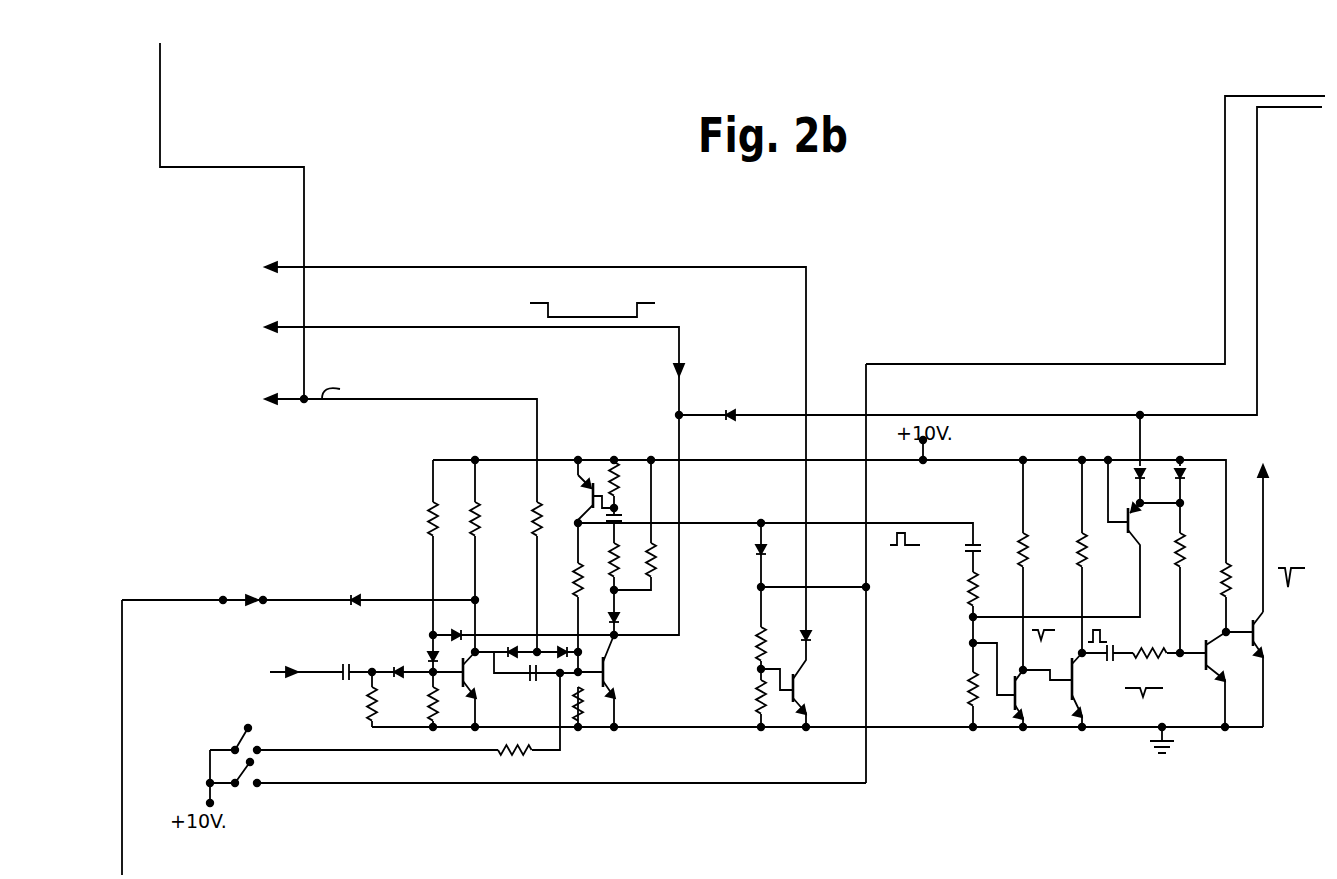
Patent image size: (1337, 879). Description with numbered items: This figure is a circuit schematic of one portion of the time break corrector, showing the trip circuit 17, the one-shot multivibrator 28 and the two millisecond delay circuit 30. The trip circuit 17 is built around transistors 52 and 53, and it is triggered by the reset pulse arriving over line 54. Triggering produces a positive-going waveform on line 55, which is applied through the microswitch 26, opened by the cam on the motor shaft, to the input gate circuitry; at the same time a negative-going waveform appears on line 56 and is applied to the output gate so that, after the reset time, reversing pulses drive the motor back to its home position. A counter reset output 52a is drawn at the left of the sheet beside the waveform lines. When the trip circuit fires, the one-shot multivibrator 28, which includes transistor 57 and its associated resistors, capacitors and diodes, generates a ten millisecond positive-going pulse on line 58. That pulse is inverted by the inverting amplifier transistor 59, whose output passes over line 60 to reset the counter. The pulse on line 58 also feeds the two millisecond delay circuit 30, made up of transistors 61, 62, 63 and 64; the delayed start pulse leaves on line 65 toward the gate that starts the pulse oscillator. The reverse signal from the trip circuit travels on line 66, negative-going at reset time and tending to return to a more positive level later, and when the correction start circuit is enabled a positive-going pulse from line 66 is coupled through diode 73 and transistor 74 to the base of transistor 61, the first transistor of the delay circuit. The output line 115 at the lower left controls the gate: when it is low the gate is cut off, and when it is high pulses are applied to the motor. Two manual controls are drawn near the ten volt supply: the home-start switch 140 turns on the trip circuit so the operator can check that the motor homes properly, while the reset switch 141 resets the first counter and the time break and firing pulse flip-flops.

The trip circuit 17 is at (600, 834).
The microswitch 26 is at (237, 605).
The multivibrator 28 is at (610, 432).
The 2 millisecond delay circuit 30 is at (1103, 814).
The transistor 52 is at (470, 689).
The counter reset output 52a is at (284, 396).
The transistor 53 is at (616, 667).
The line 54 is at (302, 671).
The line 55 is at (305, 598).
The line 56 is at (499, 326).
The transistor 57 is at (590, 492).
The line 58 is at (744, 525).
The inverting amplifier transistor 59 is at (800, 684).
The line 60 is at (607, 267).
The transistor 61 is at (1024, 689).
The transistor 62 is at (1078, 677).
The transistor 63 is at (1198, 665).
The transistor 64 is at (1252, 623).
The line 65 is at (1264, 522).
The line 66 is at (1257, 186).
The diode 73 is at (1142, 475).
The transistor 74 is at (1126, 536).
The output line 115 is at (122, 855).
The home-start switch 140 is at (235, 748).
The reset switch 141 is at (244, 787).